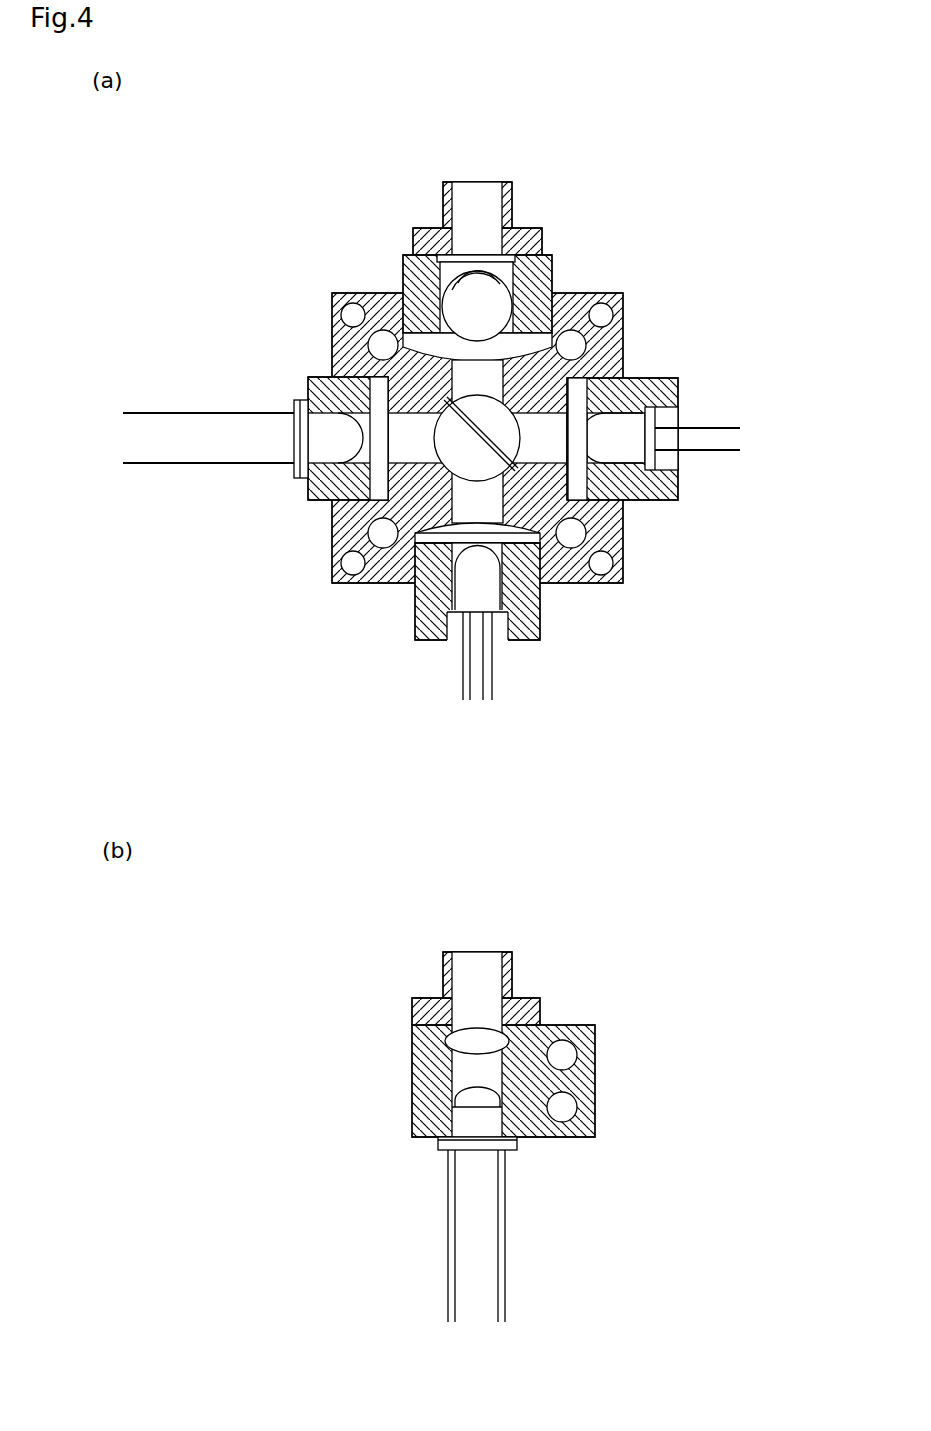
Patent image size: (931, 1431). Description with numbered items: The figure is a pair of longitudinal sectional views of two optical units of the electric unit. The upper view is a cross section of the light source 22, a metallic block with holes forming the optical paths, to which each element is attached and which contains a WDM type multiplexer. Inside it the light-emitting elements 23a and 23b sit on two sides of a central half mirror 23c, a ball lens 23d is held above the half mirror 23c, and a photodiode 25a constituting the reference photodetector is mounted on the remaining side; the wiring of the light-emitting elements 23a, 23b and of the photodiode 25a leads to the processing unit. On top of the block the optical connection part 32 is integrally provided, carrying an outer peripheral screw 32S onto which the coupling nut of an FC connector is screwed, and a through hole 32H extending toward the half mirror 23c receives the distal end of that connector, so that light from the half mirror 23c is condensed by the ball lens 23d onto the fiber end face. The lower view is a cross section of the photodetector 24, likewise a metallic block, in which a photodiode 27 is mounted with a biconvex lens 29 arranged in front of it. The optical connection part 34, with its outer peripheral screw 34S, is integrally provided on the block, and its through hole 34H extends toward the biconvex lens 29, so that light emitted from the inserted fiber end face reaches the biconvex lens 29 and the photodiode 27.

The light source 22 is at (650, 323).
The optical connection part 32 is at (513, 214).
The outer peripheral screw 32S is at (443, 200).
The through hole 32H is at (476, 199).
The ball lens 23d is at (458, 295).
The photodiode 25a is at (320, 443).
The light-emitting element 23a is at (617, 447).
The half mirror 23c is at (425, 580).
The light-emitting element 23b is at (490, 588).
The photodetector 24 is at (616, 1033).
The optical connection part 34 is at (507, 979).
The outer peripheral screw 34S is at (445, 975).
The through hole 34H is at (476, 969).
The biconvex lens 29 is at (450, 1036).
The photodiode 27 is at (463, 1112).